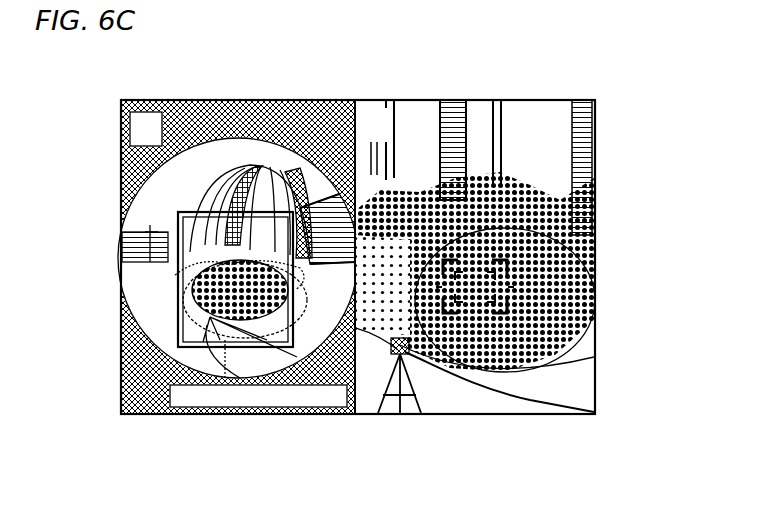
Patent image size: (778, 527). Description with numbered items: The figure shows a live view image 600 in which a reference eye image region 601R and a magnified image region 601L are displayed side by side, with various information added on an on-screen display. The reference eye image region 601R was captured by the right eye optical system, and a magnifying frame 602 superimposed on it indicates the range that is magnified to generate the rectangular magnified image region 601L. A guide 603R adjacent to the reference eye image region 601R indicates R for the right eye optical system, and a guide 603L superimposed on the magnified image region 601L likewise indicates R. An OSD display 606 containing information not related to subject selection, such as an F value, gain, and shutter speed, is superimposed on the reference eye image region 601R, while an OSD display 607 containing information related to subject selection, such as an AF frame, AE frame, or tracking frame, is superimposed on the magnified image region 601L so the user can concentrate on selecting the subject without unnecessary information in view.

The live view image 600 is at (341, 100).
The reference eye image region 601R is at (168, 358).
The magnified image region 601L is at (480, 404).
The magnifying frame 602 is at (238, 212).
The guide 603R is at (150, 110).
The guide 603L is at (386, 110).
The OSD display 606 is at (292, 407).
The OSD display 607 is at (510, 278).